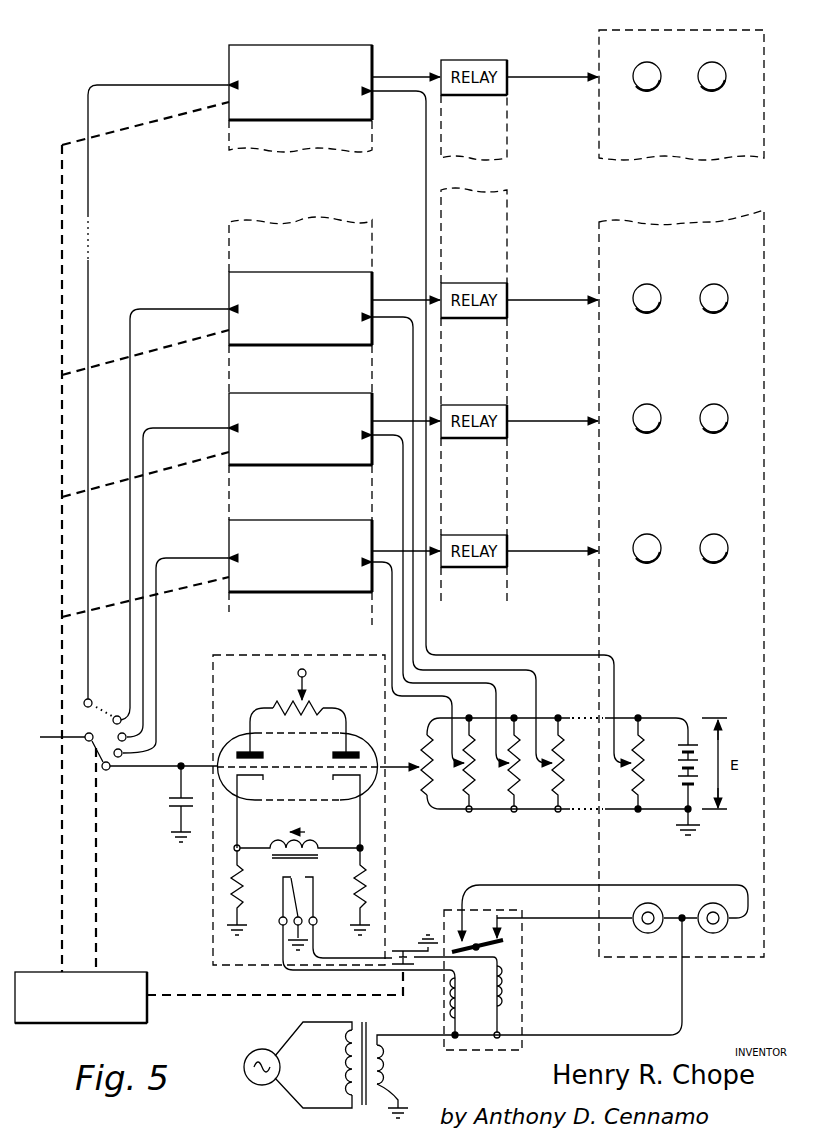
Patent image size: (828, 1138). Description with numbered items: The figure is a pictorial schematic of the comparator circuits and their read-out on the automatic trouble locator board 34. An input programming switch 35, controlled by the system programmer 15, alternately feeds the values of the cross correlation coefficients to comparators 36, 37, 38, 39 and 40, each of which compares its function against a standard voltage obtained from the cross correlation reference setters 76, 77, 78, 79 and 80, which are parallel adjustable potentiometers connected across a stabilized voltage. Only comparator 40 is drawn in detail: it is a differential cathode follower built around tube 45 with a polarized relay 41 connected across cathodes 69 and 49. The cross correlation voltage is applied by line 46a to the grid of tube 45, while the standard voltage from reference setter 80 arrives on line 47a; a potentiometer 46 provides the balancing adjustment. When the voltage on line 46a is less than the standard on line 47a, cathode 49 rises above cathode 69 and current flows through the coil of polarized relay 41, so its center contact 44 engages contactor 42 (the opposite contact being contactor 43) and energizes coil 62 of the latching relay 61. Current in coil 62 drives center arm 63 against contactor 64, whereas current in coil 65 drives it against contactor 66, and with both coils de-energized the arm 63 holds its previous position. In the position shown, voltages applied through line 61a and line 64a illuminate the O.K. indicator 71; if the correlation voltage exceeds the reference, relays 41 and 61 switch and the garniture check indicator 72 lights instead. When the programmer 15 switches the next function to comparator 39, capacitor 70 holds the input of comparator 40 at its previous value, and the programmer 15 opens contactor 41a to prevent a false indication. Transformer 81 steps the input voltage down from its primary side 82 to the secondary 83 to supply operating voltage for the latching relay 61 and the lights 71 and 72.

The system programmer 15 is at (112, 972).
The automatic trouble locator board 34 is at (691, 21).
The input programming switch 35 is at (80, 726).
The comparator 36 is at (312, 45).
The comparator 37 is at (312, 272).
The comparator 38 is at (312, 393).
The comparator 39 is at (312, 520).
The comparator 40 is at (290, 645).
The polarized relay 41 is at (255, 909).
The contactor 41a is at (409, 948).
The contactor 42 is at (282, 884).
The switch contact 43 is at (316, 904).
The center contact 44 is at (300, 893).
The tube 45 is at (220, 727).
The balance potentiometer 46 is at (291, 706).
The line 46a is at (194, 765).
The line 47a is at (393, 762).
The cathode 49 is at (360, 822).
The latching relay 61 is at (470, 882).
The line 61a is at (480, 932).
The coil 62 is at (448, 998).
The center arm 63 is at (505, 946).
The contactor 64 is at (500, 933).
The line 64a is at (571, 917).
The coil 65 is at (506, 1004).
The contactor 66 is at (460, 922).
The cathode 69 is at (240, 828).
The capacitor 70 is at (189, 799).
The O.K. indicator 71 is at (638, 930).
The garniture check indicator 72 is at (723, 930).
The cross correlation reference setter 76 is at (645, 779).
The cross correlation reference setter 77 is at (565, 779).
The cross correlation reference setter 78 is at (521, 779).
The cross correlation reference setter 79 is at (476, 779).
The cross correlation reference setter 80 is at (429, 778).
The transformer 81 is at (353, 1013).
The primary side 82 is at (345, 1052).
The secondary 83 is at (386, 1062).